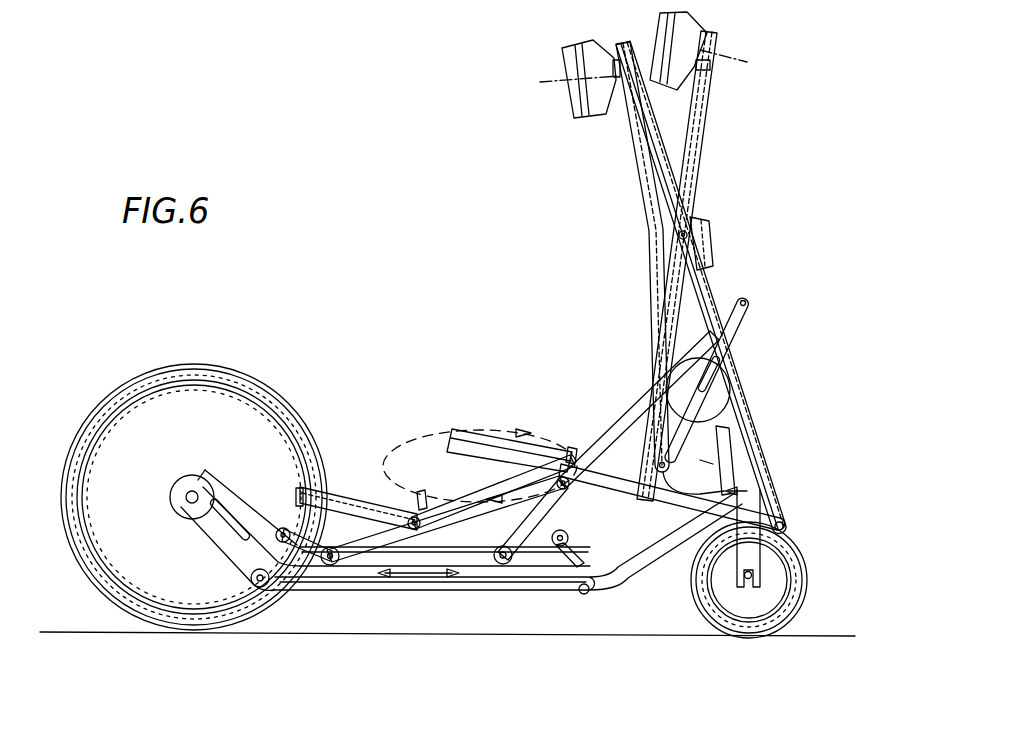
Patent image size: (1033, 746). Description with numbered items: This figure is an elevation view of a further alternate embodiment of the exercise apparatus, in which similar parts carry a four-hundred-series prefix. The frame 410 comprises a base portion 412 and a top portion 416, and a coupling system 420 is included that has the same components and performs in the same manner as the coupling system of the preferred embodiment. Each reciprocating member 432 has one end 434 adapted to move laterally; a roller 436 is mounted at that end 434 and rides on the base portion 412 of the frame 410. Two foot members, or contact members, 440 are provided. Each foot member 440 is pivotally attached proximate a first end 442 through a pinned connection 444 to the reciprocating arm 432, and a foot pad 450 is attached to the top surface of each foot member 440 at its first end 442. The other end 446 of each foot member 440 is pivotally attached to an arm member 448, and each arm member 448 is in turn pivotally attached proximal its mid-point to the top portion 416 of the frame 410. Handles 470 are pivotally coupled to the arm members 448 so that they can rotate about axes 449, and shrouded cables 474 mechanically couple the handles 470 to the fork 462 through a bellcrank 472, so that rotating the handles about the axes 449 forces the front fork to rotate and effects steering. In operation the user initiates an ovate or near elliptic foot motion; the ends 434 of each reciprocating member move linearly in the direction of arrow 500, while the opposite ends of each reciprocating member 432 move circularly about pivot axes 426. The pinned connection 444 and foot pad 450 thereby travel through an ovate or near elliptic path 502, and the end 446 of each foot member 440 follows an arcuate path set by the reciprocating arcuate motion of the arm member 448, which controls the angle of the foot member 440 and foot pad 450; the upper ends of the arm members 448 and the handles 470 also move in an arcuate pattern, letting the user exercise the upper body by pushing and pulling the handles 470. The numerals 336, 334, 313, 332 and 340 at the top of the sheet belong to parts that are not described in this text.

The link 336 is at (271, 0).
The arm 334 is at (342, 0).
The frame member 313 is at (410, 0).
The connector 332 is at (456, 0).
The pivot 340 is at (501, 0).
The axes 449 is at (560, 92).
The shrouded cables 474 is at (698, 118).
The handles 470 is at (677, 90).
The top portion 416 is at (708, 233).
The frame 410 is at (748, 437).
The reciprocating member 432 is at (643, 403).
The pivot axes 426 is at (712, 376).
The coupling system 420 is at (733, 443).
The bellcrank 472 is at (740, 480).
The arm member 448 is at (770, 487).
The other end 446 is at (760, 517).
The fork 462 is at (757, 560).
The first end 442 is at (330, 495).
The foot pad 450 is at (353, 498).
The pinned connection 444 is at (414, 518).
The ovate or near elliptic path 502 is at (557, 430).
The foot member 440 is at (470, 568).
The roller 436 is at (322, 562).
The base portion 412 is at (323, 580).
The end 434 is at (354, 567).
The arrow 500 is at (420, 578).